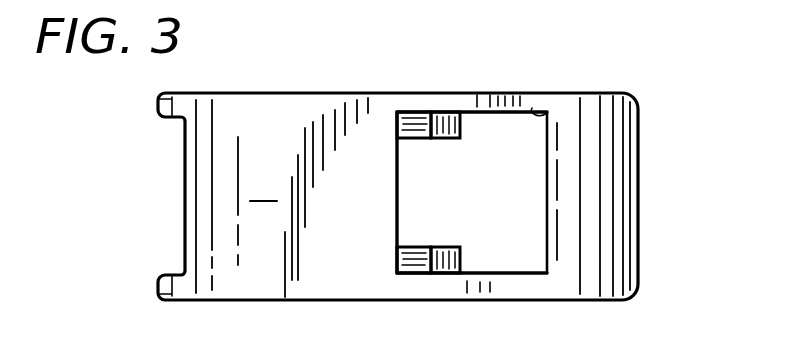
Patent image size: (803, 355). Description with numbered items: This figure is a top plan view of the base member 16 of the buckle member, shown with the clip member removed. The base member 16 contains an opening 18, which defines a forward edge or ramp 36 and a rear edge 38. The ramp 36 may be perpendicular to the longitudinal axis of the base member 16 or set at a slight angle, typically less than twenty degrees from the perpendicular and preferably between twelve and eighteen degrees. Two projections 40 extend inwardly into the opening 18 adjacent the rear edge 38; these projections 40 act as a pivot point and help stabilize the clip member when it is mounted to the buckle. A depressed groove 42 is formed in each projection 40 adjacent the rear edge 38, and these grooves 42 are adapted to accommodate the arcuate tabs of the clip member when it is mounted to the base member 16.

The base member 16 is at (630, 70).
The opening 18 is at (527, 258).
The ramp 36 is at (536, 110).
The rear edge 38 is at (406, 204).
The projections 40 is at (443, 112).
The depressed groove 42 is at (395, 112).